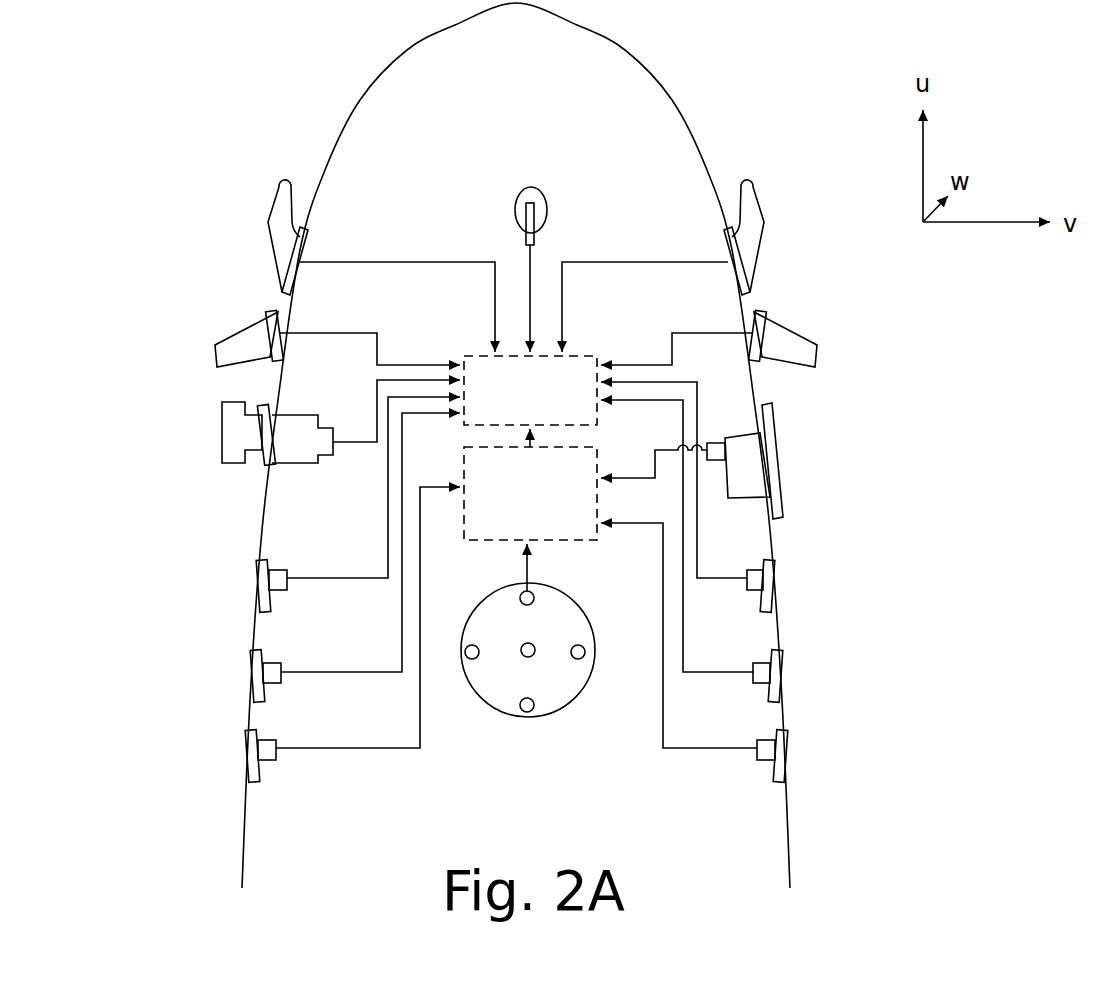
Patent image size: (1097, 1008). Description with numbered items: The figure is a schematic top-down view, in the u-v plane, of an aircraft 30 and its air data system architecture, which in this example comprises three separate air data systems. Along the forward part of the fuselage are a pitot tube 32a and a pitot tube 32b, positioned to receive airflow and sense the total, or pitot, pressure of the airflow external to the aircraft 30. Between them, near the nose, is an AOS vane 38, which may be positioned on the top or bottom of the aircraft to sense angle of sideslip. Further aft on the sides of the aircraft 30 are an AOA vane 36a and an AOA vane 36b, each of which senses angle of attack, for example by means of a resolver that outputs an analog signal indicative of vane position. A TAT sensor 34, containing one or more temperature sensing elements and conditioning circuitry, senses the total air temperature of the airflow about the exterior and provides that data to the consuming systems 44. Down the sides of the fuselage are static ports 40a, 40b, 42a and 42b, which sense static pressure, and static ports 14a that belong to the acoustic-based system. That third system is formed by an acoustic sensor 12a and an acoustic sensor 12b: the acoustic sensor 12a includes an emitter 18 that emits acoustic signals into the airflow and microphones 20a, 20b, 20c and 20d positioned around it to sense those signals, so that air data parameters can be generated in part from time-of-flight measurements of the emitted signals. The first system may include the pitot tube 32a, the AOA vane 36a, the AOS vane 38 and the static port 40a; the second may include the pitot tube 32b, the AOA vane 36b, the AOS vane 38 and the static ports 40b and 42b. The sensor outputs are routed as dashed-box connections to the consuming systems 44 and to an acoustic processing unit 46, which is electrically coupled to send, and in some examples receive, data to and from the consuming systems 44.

The aircraft 30 is at (402, 62).
The pitot tube 32a is at (270, 217).
The pitot tube 32b is at (757, 208).
The AOA vane 36a is at (243, 325).
The AOA vane 36b is at (785, 330).
The TAT sensor 34 is at (222, 433).
The AOS vane 38 is at (533, 187).
The consuming systems 44 is at (572, 357).
The acoustic processing unit 46 is at (598, 450).
The acoustic sensor 12b is at (776, 462).
The acoustic sensor 12a is at (562, 712).
The emitter 18 is at (556, 630).
The microphone 20a is at (535, 594).
The microphone 20b is at (588, 652).
The microphone 20c is at (520, 710).
The microphone 20d is at (466, 647).
The static port 40a is at (258, 578).
The static port 40b is at (252, 672).
The static port 42a is at (773, 578).
The static port 42b is at (781, 672).
The static port 14a is at (247, 748).